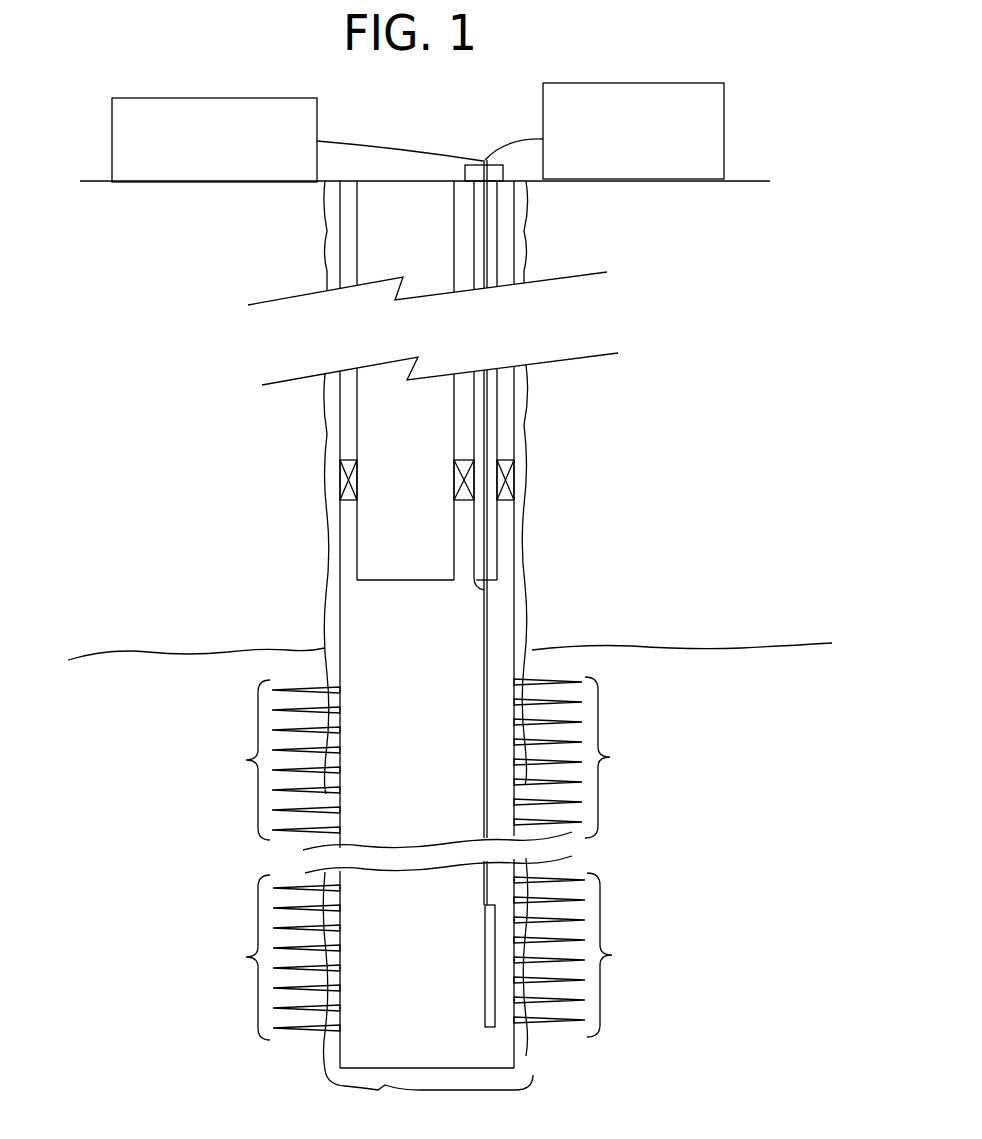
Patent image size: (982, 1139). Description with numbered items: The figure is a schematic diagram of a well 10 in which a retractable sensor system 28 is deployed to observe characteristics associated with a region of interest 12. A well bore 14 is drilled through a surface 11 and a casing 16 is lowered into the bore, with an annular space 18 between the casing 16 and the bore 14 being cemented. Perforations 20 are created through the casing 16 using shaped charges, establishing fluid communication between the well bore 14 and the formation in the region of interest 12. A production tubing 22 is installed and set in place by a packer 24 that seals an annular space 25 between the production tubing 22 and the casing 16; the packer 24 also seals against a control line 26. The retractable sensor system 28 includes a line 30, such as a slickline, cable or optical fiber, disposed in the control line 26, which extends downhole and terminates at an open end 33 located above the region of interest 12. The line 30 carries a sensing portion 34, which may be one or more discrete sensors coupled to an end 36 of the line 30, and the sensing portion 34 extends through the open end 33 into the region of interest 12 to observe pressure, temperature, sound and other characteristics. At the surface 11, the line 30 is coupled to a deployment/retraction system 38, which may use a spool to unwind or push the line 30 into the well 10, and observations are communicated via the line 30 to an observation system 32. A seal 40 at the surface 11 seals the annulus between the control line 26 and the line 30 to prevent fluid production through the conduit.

The well 10 is at (773, 222).
The surface 11 is at (95, 181).
The region of interest 12 is at (117, 690).
The well bore 14 is at (527, 560).
The casing 16 is at (515, 624).
The annular space 18 is at (325, 556).
The perforations 20 is at (246, 760).
The production tubing 22 is at (458, 403).
The packer 24 is at (340, 455).
The annular space 25 is at (347, 407).
The control line 26 is at (497, 533).
The retractable sensor system 28 is at (467, 665).
The line 30 is at (487, 605).
The observation system 32 is at (112, 130).
The open end 33 is at (472, 590).
The sensing portion 34 is at (485, 968).
The end 36 is at (484, 888).
The deployment/retraction system 38 is at (724, 113).
The seal 40 is at (463, 171).